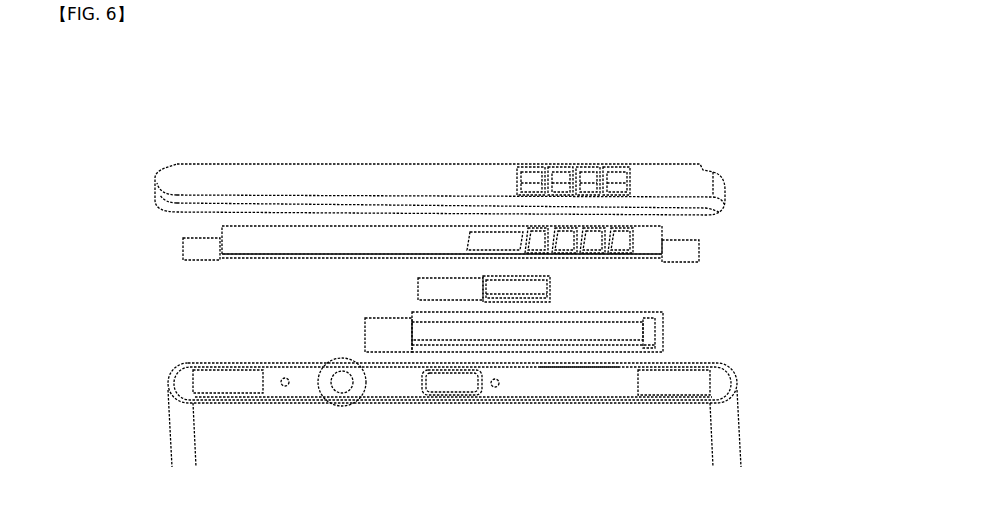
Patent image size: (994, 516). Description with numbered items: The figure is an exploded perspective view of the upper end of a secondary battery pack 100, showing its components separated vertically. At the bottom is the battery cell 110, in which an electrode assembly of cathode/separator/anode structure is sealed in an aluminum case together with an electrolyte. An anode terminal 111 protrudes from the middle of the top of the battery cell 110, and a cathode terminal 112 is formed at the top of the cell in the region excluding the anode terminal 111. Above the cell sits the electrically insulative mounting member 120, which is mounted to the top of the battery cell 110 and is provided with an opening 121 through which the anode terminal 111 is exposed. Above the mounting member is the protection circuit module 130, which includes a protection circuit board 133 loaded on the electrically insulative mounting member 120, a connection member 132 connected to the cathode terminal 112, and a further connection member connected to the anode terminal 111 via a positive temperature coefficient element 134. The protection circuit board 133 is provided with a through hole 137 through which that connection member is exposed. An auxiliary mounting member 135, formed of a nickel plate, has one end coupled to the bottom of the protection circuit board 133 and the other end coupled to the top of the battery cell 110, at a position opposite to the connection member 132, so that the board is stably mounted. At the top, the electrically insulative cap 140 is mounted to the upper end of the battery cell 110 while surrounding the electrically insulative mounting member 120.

The secondary battery pack 100 is at (36, 110).
The battery cell 110 is at (513, 425).
The anode terminal 111 is at (450, 373).
The cathode terminal 112 is at (577, 377).
The electrically insulative mounting member 120 is at (554, 326).
The opening 121 is at (433, 332).
The protection circuit module 130 is at (451, 222).
The connection member 132 is at (680, 253).
The protection circuit board 133 is at (270, 258).
The positive temperature coefficient element 134 is at (555, 300).
The auxiliary mounting member 135 is at (200, 245).
The through hole 137 is at (494, 242).
The electrically insulative cap 140 is at (732, 198).